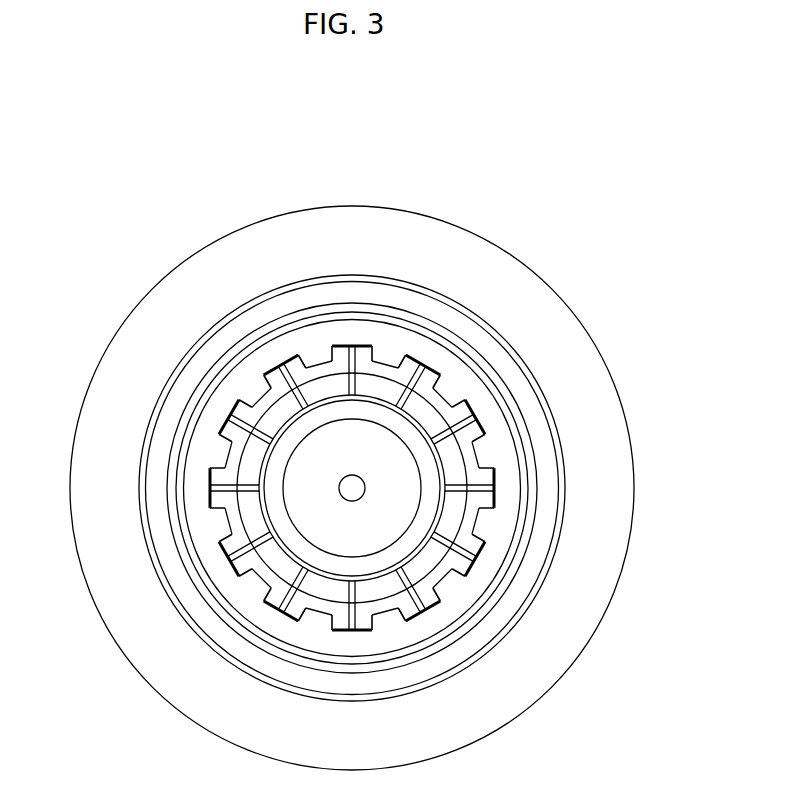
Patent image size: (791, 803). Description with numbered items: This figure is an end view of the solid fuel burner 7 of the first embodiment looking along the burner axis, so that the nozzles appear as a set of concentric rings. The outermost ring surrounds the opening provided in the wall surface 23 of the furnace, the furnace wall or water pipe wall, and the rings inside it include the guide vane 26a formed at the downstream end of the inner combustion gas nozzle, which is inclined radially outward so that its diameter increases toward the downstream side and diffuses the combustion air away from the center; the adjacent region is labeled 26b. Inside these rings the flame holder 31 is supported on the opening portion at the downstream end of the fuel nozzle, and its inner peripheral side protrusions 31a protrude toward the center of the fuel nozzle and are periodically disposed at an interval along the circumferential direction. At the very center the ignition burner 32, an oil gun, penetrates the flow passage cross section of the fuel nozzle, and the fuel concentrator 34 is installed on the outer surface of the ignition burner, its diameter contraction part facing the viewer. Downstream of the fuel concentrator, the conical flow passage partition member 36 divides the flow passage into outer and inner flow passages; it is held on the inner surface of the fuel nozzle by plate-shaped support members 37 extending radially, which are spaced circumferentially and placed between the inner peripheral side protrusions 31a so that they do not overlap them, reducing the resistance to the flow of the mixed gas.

The solid fuel burner 7 is at (631, 224).
The wall surface 23 is at (362, 178).
The guide vane 26a is at (190, 378).
The outer cylindrical portion 26b is at (143, 418).
The flame holder 31 is at (343, 345).
The inner peripheral side protrusions 31a is at (318, 362).
The ignition burner 32 is at (353, 497).
The fuel concentrator 34 is at (342, 472).
The flow passage partition member 36 is at (277, 410).
The support members 37 is at (368, 347).